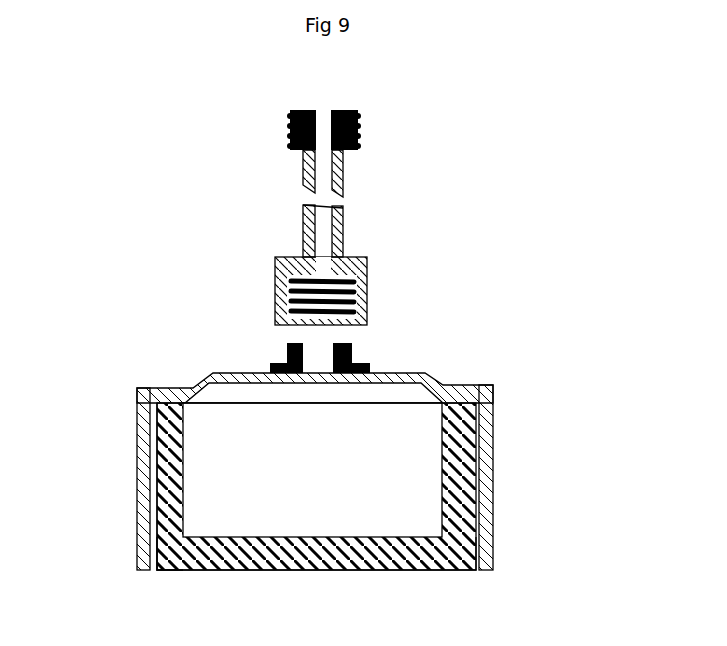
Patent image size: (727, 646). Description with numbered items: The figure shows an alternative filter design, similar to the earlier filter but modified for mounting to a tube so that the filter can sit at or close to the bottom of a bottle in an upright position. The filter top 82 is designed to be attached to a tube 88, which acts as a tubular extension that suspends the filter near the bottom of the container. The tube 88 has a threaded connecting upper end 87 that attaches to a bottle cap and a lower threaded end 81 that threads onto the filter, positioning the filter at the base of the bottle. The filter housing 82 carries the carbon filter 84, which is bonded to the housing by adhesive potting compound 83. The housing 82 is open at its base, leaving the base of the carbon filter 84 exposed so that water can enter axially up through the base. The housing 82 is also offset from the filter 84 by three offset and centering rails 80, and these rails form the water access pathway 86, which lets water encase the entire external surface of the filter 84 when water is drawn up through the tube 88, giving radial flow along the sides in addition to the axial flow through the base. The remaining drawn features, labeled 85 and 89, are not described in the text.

The offset and centering rails 80 is at (140, 432).
The lower threaded end 81 is at (380, 270).
The filter top 82 is at (424, 360).
The adhesive potting compound 83 is at (183, 402).
The carbon filter 84 is at (455, 588).
The side wall 85 is at (150, 578).
The water access pathway 86 is at (137, 520).
The threaded connecting upper end 87 is at (398, 113).
The tube 88 is at (295, 232).
The fitting 89 is at (282, 358).